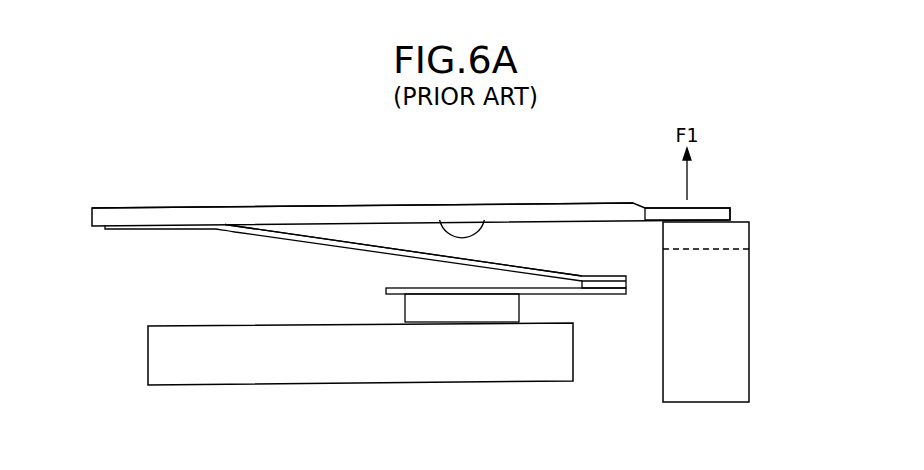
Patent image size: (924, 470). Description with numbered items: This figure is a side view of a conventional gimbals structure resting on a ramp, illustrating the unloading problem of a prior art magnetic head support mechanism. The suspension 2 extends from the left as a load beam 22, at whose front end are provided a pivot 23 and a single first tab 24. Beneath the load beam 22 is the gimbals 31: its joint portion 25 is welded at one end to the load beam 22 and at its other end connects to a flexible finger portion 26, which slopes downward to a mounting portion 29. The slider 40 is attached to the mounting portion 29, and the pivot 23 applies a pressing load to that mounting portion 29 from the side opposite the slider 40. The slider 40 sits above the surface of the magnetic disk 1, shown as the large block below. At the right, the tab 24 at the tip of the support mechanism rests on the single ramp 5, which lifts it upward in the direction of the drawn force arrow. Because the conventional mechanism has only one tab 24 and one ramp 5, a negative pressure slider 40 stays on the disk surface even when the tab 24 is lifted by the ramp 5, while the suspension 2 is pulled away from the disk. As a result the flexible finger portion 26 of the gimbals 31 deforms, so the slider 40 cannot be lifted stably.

The magnetic disk 1 is at (280, 373).
The suspension 2 is at (215, 201).
The ramp 5 is at (735, 238).
The load beam 22 is at (398, 217).
The pivot 23 is at (463, 228).
The first tab 24 is at (715, 210).
The joint portion 25 is at (150, 227).
The flexible finger portion 26 is at (270, 235).
The mounting portion 29 is at (407, 292).
The gimbals 31 is at (366, 240).
The slider 40 is at (422, 313).